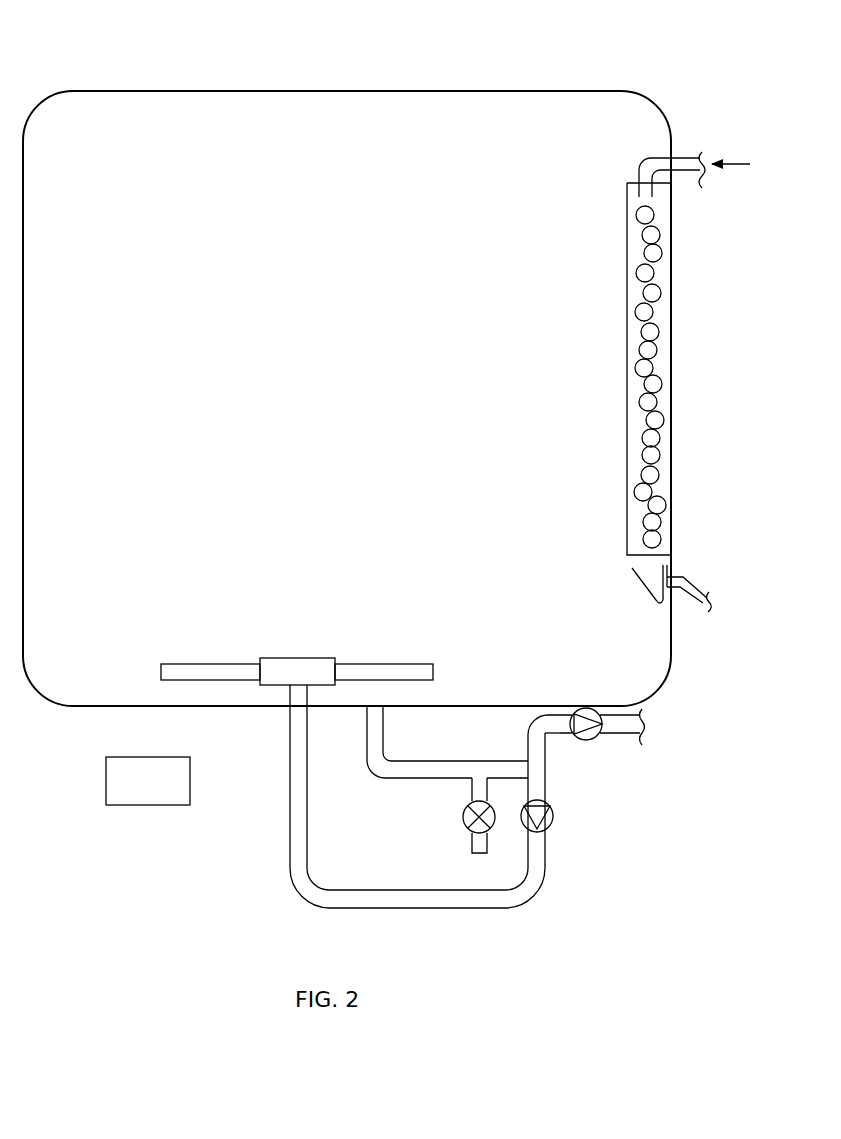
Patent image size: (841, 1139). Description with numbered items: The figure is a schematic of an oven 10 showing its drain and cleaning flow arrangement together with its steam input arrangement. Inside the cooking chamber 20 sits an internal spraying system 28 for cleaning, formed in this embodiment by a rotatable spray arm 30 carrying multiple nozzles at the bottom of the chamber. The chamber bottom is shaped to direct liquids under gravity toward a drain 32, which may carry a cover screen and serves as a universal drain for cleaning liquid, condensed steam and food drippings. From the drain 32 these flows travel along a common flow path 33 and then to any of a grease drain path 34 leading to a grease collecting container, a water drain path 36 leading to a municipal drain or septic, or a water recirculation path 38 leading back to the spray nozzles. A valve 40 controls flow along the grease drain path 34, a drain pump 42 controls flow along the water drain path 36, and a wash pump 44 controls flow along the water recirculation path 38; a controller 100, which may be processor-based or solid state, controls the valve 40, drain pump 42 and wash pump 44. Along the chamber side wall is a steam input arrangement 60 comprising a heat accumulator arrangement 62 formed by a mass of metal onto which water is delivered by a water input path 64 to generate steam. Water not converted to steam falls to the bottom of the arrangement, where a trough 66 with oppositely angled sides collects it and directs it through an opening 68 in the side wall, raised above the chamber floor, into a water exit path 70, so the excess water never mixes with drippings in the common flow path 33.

The oven 10 is at (680, 91).
The cooking chamber 20 is at (365, 410).
The internal spraying system 28 is at (301, 654).
The rotatable spray arm 30 is at (208, 663).
The drain 32 is at (375, 704).
The common flow path 33 is at (428, 758).
The grease drain path 34 is at (468, 842).
The water drain path 36 is at (618, 736).
The water recirculation path 38 is at (547, 857).
The valve 40 is at (462, 817).
The drain pump 42 is at (588, 740).
The wash pump 44 is at (553, 818).
The steam input arrangement 60 is at (604, 191).
The heat accumulator arrangement 62 is at (656, 254).
The water input path 64 is at (683, 156).
The trough 66 is at (628, 590).
The opening 68 is at (680, 578).
The water exit path 70 is at (703, 602).
The controller 100 is at (170, 793).